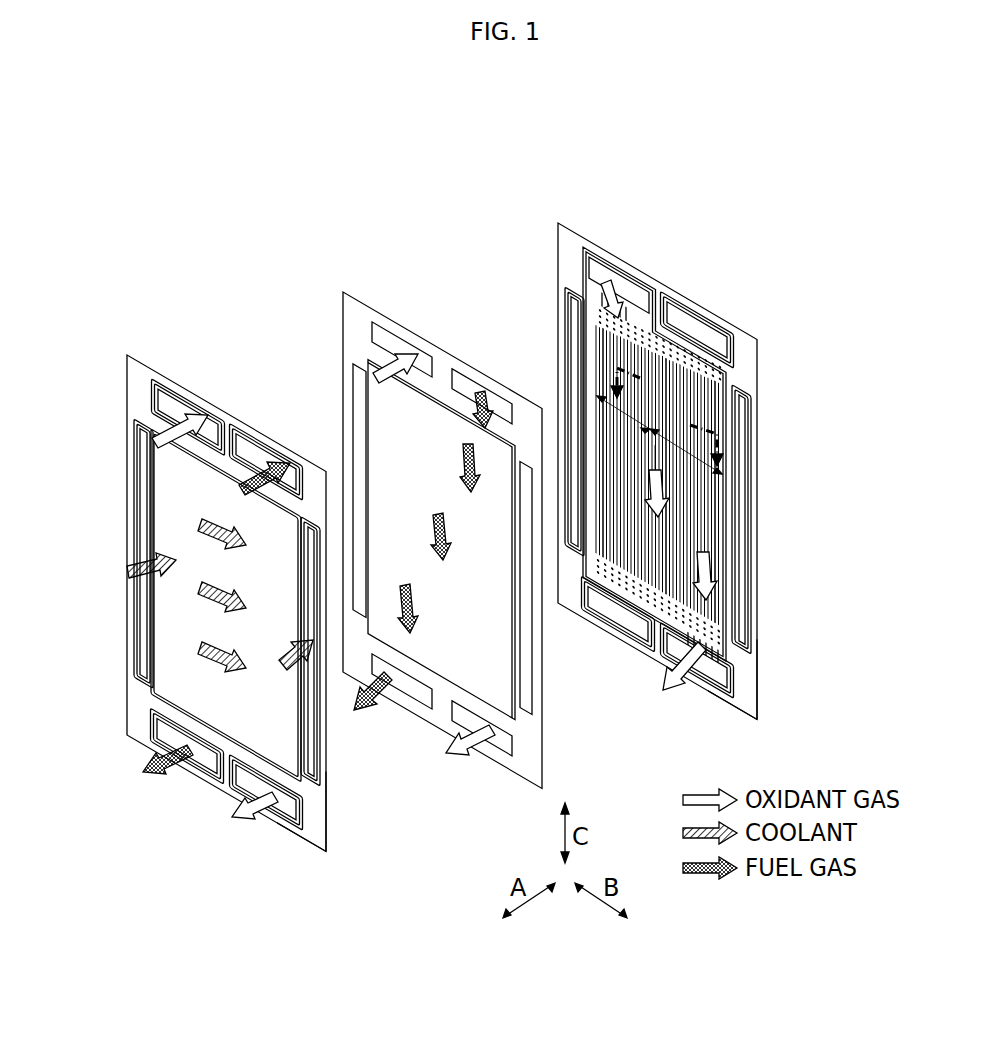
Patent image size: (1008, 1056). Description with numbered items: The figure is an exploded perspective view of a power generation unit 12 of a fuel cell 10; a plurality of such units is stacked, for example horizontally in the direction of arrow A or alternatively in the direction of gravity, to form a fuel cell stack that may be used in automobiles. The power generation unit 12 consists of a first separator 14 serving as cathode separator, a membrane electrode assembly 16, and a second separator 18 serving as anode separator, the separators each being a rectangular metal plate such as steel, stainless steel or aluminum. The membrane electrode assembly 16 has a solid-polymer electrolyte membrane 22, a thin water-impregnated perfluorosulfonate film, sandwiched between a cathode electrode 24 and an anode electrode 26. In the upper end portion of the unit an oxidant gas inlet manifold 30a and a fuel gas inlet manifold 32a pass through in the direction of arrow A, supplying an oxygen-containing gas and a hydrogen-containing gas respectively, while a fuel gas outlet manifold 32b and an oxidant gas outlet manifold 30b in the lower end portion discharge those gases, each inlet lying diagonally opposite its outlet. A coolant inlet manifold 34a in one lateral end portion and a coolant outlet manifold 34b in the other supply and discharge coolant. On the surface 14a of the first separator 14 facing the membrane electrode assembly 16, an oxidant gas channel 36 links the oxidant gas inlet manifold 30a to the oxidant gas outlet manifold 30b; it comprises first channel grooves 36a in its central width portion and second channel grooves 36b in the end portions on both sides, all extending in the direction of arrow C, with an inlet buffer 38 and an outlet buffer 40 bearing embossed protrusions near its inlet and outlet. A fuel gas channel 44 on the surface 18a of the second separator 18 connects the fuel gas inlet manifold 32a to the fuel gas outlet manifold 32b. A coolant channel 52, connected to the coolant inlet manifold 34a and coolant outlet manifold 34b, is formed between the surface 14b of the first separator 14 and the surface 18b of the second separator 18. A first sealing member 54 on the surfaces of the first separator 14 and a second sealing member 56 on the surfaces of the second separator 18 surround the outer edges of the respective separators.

The fuel cell 10 is at (605, 92).
The power generation unit 12 is at (566, 92).
The first separator 14 is at (558, 223).
The surface of the first separator 14a is at (748, 688).
The surface of the first separator 14b is at (745, 663).
The membrane electrode assembly 16 is at (343, 292).
The second separator 18 is at (130, 357).
The surface of the second separator 18a is at (320, 797).
The surface of the second separator 18b is at (325, 822).
The solid-polymer electrolyte membrane 22 is at (358, 351).
The cathode electrode 24 is at (400, 428).
The anode electrode 26 is at (400, 400).
The oxidant gas inlet manifold 30a is at (175, 403).
The oxidant gas outlet manifold 30b is at (281, 802).
The fuel gas inlet manifold 32a is at (255, 453).
The fuel gas outlet manifold 32b is at (206, 772).
The coolant inlet manifold 34a is at (142, 650).
The coolant outlet manifold 34b is at (312, 748).
The oxidant gas channel 36 is at (696, 522).
The first channel grooves 36a is at (665, 535).
The second channel grooves 36b is at (722, 588).
The inlet buffer 38 is at (680, 345).
The outlet buffer 40 is at (630, 592).
The fuel gas channel 44 is at (166, 521).
The coolant channel 52 is at (170, 503).
The first sealing member 54 is at (645, 283).
The second sealing member 56 is at (211, 404).